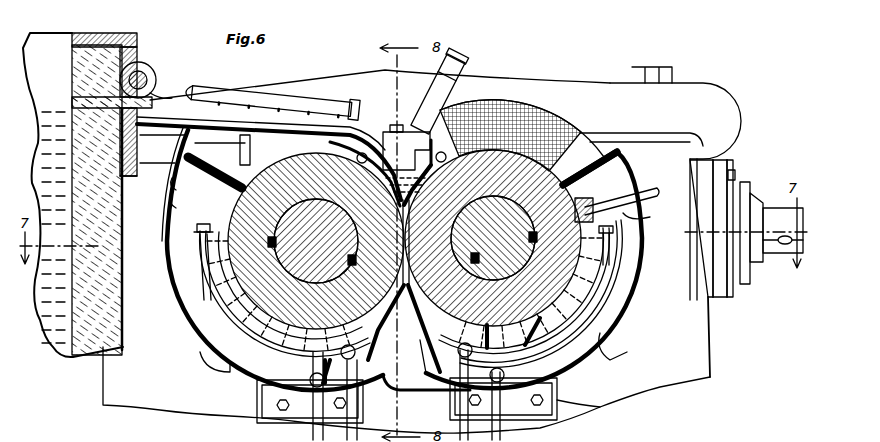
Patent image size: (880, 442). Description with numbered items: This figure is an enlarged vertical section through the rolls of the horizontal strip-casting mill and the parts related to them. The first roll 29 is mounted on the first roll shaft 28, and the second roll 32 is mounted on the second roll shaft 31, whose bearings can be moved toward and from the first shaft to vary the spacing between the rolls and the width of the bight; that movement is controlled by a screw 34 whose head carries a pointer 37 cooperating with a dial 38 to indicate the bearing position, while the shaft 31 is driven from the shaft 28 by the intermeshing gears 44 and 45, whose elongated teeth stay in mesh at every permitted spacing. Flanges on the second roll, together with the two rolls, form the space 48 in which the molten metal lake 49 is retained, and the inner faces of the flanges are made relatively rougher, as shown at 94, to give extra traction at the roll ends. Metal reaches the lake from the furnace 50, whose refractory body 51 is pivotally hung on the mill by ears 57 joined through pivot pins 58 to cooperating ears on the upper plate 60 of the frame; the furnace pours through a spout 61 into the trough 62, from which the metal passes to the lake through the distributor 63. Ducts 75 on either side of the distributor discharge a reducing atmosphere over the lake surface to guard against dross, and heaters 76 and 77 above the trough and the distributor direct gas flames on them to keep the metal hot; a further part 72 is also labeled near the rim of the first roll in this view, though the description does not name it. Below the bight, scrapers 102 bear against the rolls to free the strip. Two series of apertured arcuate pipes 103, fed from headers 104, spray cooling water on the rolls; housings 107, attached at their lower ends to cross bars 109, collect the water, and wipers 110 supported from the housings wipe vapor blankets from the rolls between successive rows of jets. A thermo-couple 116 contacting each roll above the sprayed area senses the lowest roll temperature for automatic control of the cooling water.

The first roll shaft 28 is at (267, 220).
The first roll 29 is at (253, 200).
The second roll shaft 31 is at (565, 180).
The second roll 32 is at (540, 160).
The screw 34 is at (763, 262).
The pointer 37 is at (750, 200).
The dial 38 is at (743, 207).
The gear 44 is at (245, 441).
The gear 45 is at (628, 424).
The space 48 is at (410, 197).
The molten metal lake 49 is at (397, 207).
The furnace 50 is at (127, 33).
The body 51 is at (92, 347).
The ears 57 is at (160, 96).
The pivot pins 58 is at (152, 76).
The upper plate 60 is at (703, 100).
The spout 61 is at (80, 97).
The trough 62 is at (250, 117).
The distributor 63 is at (413, 133).
The rotor 72 is at (357, 177).
The ducts 75 is at (365, 152).
The heater 76 is at (313, 103).
The heater 77 is at (447, 60).
The roughened inner flange face 94 is at (513, 130).
The scrapers 102 is at (378, 330).
The arcuate pipes 103 is at (227, 300).
The headers 104 is at (400, 375).
The housings 107 is at (200, 352).
The cross bars 109 is at (253, 397).
The wipers 110 is at (290, 347).
The thermo-couple 116 is at (612, 178).